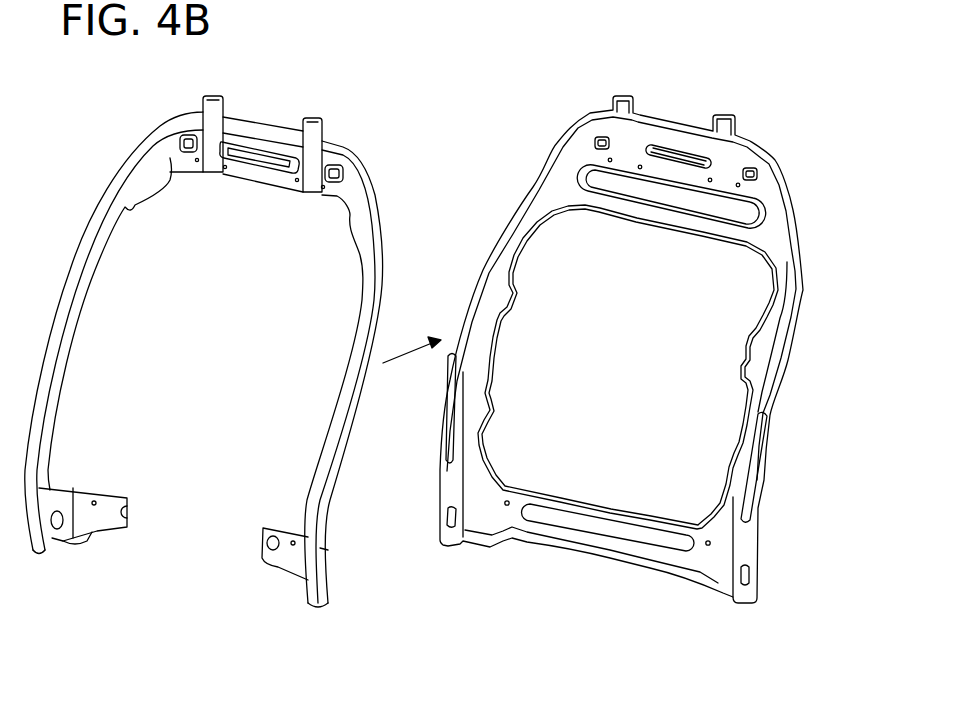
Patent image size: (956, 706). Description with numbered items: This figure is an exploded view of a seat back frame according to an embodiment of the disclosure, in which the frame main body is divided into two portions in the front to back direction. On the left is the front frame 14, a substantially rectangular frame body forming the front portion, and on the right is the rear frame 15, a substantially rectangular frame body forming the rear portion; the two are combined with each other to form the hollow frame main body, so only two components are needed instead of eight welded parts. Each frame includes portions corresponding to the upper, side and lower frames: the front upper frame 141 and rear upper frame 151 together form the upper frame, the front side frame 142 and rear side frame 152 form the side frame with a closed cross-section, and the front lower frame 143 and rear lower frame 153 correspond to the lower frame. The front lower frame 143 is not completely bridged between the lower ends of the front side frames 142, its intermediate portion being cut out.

The front frame 14 is at (115, 133).
The front upper frame 141 is at (163, 160).
The front side frame 142 is at (63, 347).
The front lower frame 143 is at (90, 522).
The rear frame 15 is at (522, 133).
The rear upper frame 151 is at (766, 189).
The rear side frame 152 is at (768, 397).
The rear lower frame 153 is at (700, 555).